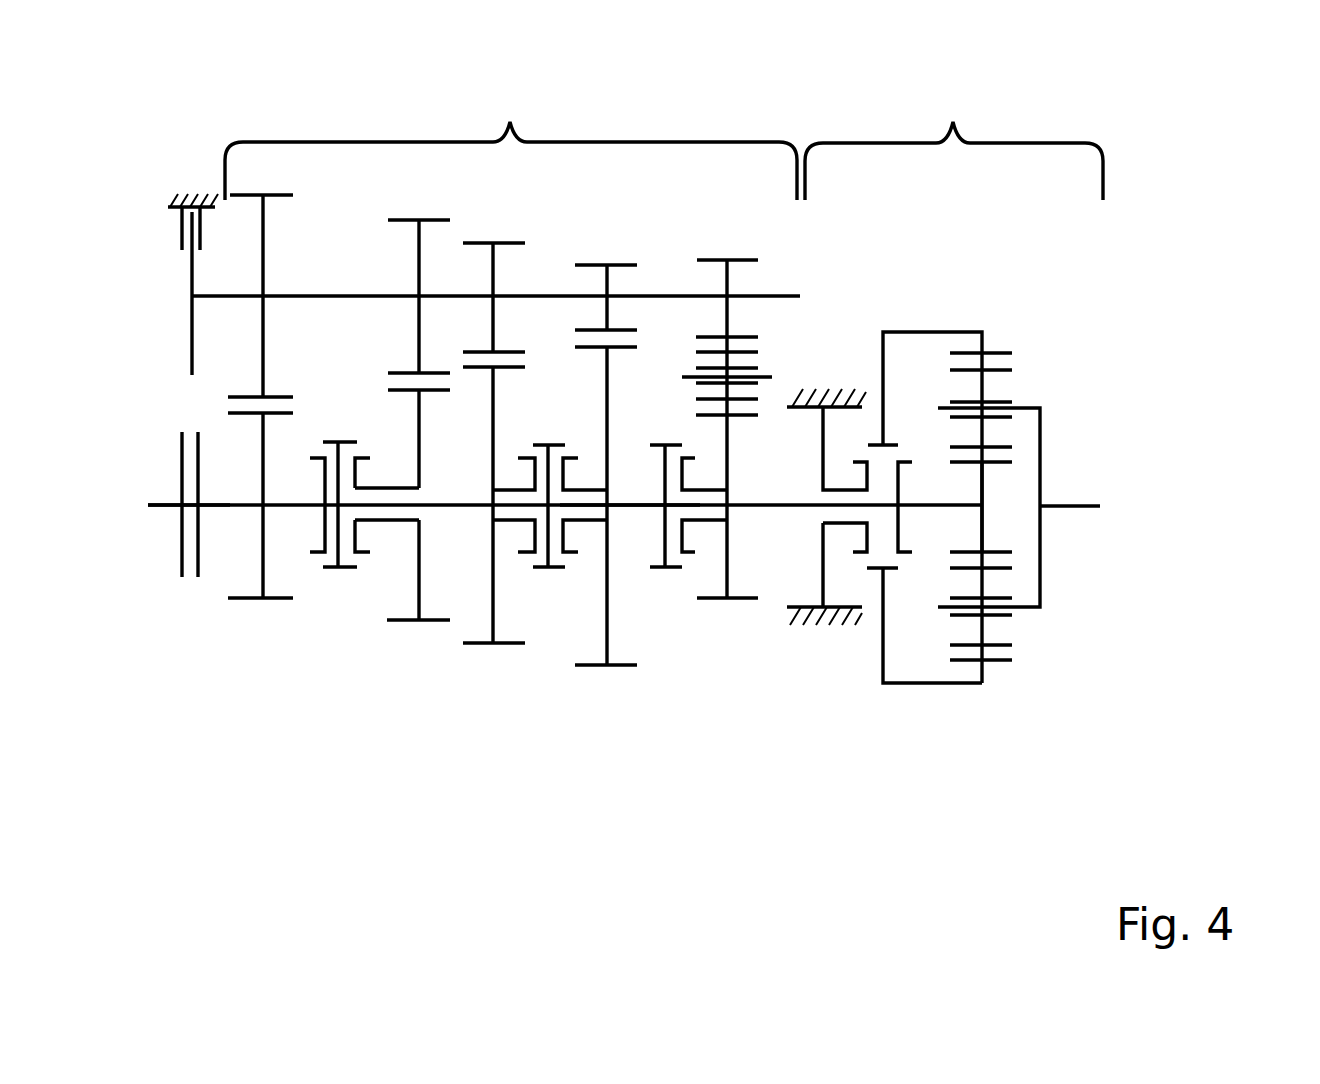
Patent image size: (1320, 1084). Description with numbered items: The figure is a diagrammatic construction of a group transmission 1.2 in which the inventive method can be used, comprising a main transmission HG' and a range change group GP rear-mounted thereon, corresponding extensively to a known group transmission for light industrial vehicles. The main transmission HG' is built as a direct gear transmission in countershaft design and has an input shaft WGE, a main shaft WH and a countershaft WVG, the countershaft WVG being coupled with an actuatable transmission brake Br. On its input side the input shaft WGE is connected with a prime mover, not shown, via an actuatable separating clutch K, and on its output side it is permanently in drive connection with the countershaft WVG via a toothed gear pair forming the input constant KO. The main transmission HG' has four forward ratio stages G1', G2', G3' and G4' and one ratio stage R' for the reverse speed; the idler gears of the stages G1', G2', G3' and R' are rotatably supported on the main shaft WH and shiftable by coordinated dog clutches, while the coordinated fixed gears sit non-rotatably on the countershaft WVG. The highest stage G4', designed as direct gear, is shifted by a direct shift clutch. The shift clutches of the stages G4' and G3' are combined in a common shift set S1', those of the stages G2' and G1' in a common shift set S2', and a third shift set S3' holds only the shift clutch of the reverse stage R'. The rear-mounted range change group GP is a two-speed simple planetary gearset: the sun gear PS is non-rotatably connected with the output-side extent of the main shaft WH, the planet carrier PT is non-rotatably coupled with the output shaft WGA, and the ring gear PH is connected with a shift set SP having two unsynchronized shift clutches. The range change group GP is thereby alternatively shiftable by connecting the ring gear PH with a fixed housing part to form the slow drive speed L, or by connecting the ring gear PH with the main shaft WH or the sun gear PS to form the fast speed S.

The main transmission HG' is at (511, 143).
The range change group GP is at (954, 144).
The transmission brake Br is at (172, 284).
The separating clutch K is at (174, 504).
The input constant KO is at (268, 296).
The ratio stage G4' is at (272, 465).
The ratio stage G3' is at (402, 401).
The ratio stage G2' is at (499, 424).
The ratio stage G1' is at (600, 444).
The ratio stage for reverse speed R' is at (727, 410).
The shift set S1' is at (340, 487).
The shift set S2' is at (543, 487).
The shift set S3' is at (659, 487).
The countershaft WVG is at (775, 296).
The input shaft WGE is at (228, 505).
The main shaft WH is at (633, 505).
The output shaft WGA is at (1068, 507).
The slow drive speed L is at (827, 507).
The shift set SP is at (897, 458).
The fast speed S is at (924, 594).
The ring gear PH is at (932, 332).
The planet carrier PT is at (1025, 408).
The sun gear PS is at (982, 487).
The group transmission 1.2 is at (955, 735).